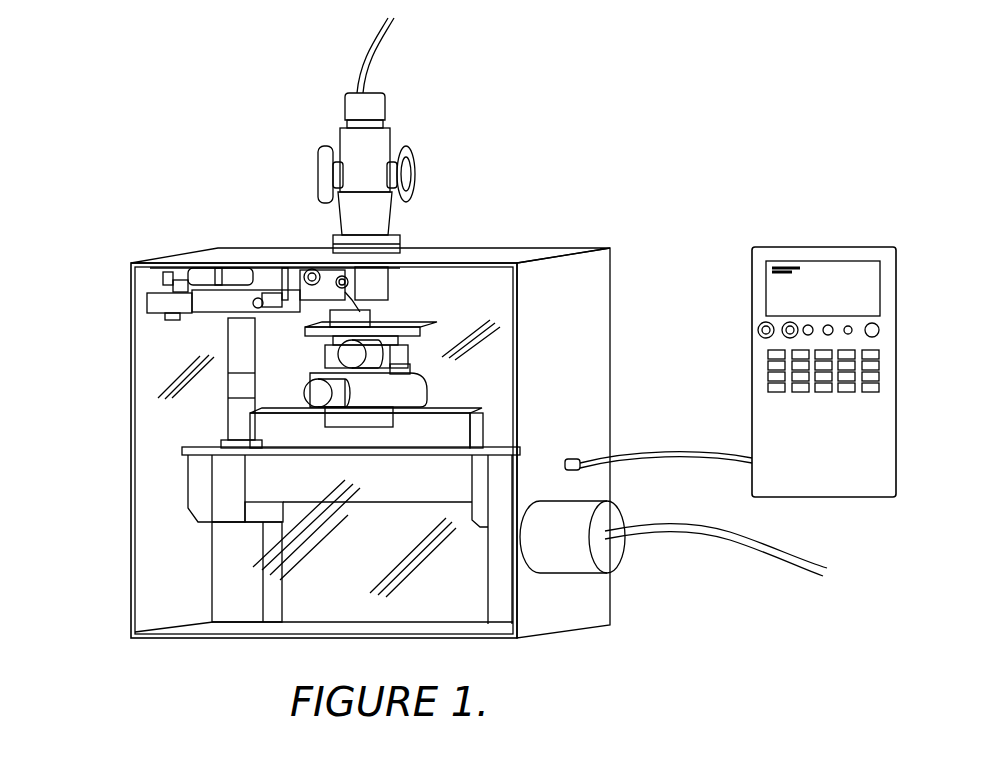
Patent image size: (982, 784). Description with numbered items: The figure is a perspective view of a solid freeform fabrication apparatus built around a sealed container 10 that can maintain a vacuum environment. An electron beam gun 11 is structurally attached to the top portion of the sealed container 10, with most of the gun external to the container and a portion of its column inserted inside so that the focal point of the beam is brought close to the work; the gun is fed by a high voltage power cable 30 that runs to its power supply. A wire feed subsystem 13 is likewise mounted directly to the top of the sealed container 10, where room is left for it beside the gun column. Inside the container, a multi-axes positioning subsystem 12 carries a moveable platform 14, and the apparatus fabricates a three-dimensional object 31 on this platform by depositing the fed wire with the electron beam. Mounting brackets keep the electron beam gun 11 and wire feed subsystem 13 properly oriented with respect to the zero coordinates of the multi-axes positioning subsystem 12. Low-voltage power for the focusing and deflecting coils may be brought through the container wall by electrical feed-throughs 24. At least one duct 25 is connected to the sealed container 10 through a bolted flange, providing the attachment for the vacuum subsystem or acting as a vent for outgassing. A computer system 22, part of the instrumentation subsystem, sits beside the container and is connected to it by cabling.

The sealed container 10 is at (583, 288).
The electron beam gun 11 is at (377, 150).
The multi-axes positioning subsystem 12 is at (330, 357).
The wire feed subsystem 13 is at (310, 273).
The moveable platform 14 is at (388, 322).
The computer system 22 is at (770, 410).
The electrical feed-throughs 24 is at (575, 462).
The duct 25 is at (695, 528).
The high voltage power cable 30 is at (362, 52).
The three-dimensional object 31 is at (342, 320).